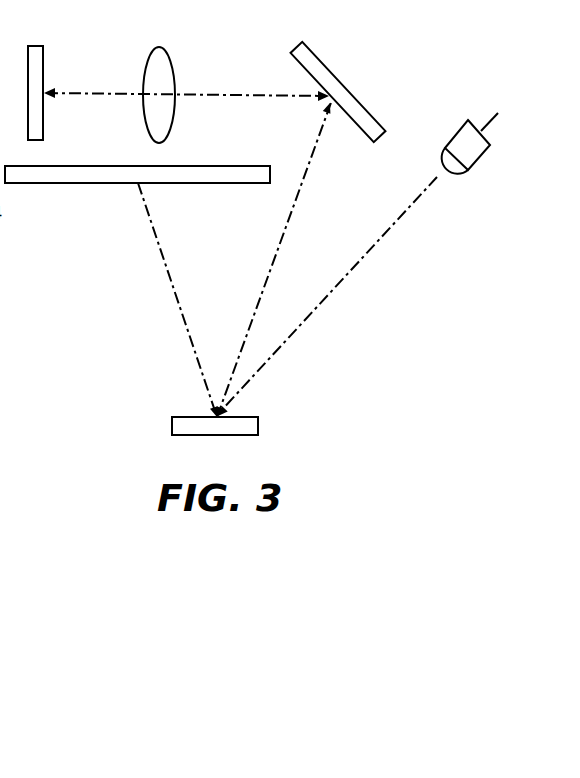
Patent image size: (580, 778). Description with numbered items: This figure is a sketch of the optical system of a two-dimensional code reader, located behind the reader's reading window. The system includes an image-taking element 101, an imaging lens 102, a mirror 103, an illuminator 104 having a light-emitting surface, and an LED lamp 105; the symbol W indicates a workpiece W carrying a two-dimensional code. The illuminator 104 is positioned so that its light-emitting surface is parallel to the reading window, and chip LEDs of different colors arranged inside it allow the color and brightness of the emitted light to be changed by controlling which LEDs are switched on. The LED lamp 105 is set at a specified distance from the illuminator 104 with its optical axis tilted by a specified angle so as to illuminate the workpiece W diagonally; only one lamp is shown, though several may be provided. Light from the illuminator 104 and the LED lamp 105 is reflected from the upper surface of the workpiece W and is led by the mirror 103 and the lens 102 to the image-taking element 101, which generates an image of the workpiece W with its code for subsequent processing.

The image-taking element 101 is at (45, 60).
The imaging lens 102 is at (176, 72).
The mirror 103 is at (327, 65).
The illuminator 104 is at (226, 166).
The LED lamp 105 is at (482, 158).
The workpiece W is at (245, 417).